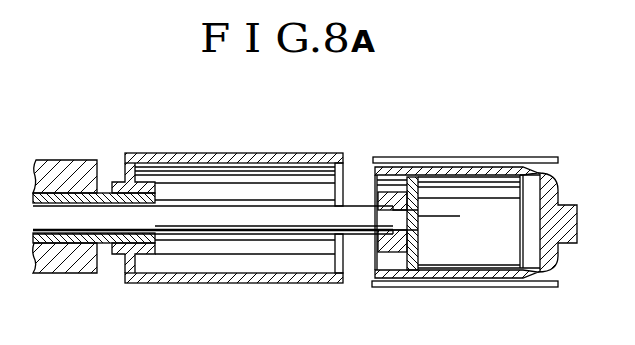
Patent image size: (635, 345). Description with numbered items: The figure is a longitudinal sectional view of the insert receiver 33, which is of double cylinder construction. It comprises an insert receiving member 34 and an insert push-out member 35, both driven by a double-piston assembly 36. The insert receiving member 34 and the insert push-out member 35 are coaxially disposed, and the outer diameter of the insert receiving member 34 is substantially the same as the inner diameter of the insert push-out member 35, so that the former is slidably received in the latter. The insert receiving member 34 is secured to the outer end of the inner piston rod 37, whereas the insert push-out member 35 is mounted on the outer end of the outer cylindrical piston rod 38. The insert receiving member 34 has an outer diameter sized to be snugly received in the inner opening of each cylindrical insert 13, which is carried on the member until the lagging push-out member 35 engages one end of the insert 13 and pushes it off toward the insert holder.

The insert 13 is at (511, 163).
The insert receiver 33 is at (355, 126).
The insert receiving member 34 is at (450, 168).
The insert push-out member 35 is at (205, 152).
The double-piston assembly 36 is at (47, 167).
The inner piston rod 37 is at (263, 215).
The outer cylindrical piston rod 38 is at (87, 196).